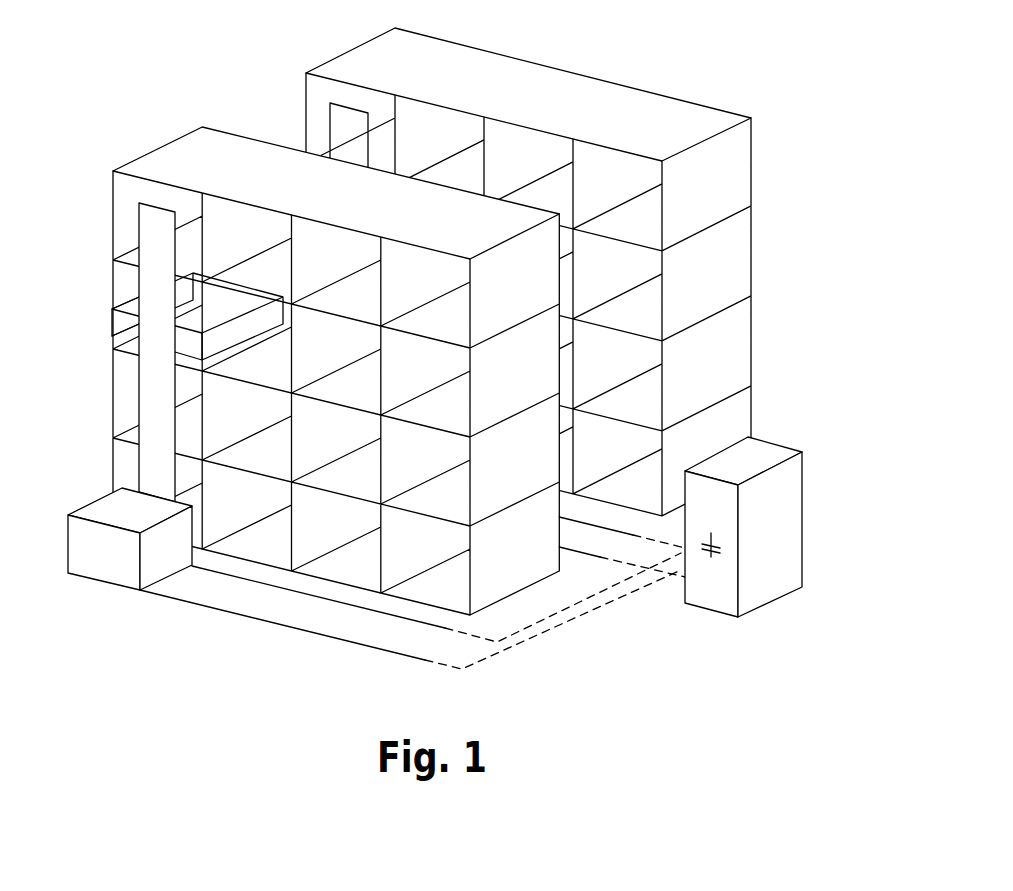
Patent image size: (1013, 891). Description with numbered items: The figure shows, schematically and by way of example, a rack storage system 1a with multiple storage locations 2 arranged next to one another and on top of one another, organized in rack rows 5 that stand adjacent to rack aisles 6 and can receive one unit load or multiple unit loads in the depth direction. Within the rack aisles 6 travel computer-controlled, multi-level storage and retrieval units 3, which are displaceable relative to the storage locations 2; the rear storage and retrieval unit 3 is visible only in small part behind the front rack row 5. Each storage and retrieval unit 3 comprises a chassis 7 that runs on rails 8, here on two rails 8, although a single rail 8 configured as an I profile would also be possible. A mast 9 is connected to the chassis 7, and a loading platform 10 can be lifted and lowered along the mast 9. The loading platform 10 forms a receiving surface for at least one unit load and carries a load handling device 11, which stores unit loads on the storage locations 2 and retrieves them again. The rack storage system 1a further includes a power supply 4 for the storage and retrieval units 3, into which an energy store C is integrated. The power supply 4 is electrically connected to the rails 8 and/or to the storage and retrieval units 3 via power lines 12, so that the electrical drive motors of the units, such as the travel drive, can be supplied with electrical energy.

The rack storage system 1a is at (790, 54).
The storage locations 2 is at (234, 224).
The rack rows 5 is at (185, 158).
The mast 9 is at (146, 234).
The loading platform 10 is at (198, 320).
The load handling device 11 is at (128, 322).
The chassis 7 is at (106, 508).
The storage and retrieval unit 3 is at (115, 399).
The rails 8 is at (262, 620).
The rack aisles 6 is at (412, 614).
The power lines 12 is at (588, 613).
The power supply 4 is at (783, 520).
The energy store C is at (711, 557).